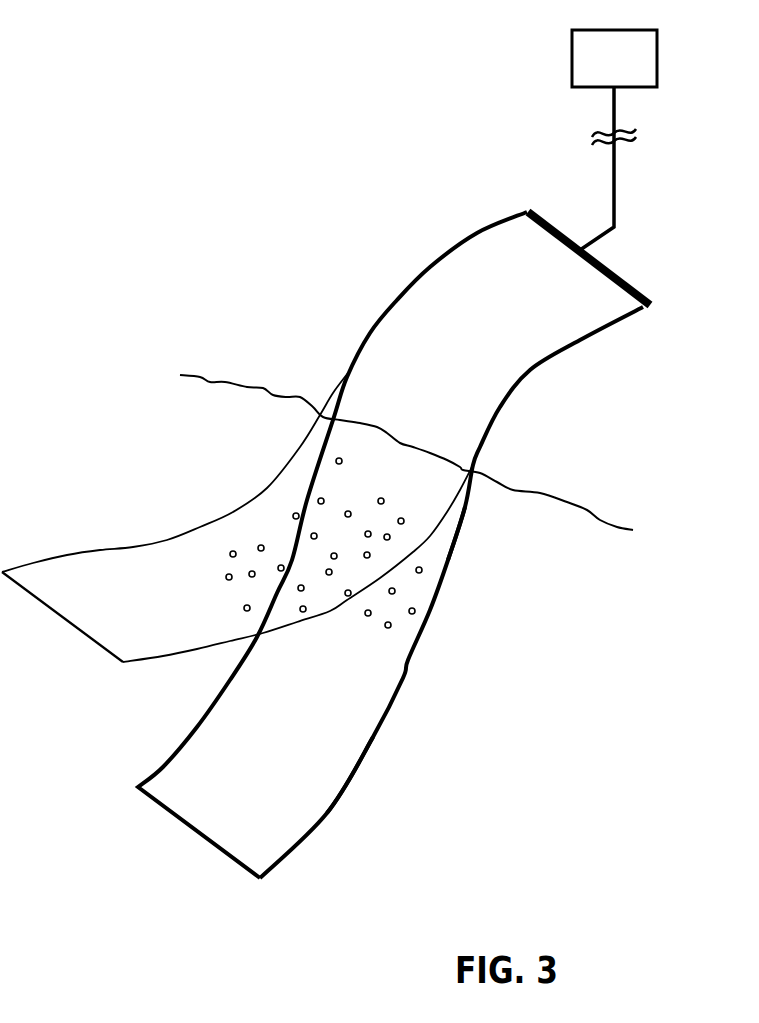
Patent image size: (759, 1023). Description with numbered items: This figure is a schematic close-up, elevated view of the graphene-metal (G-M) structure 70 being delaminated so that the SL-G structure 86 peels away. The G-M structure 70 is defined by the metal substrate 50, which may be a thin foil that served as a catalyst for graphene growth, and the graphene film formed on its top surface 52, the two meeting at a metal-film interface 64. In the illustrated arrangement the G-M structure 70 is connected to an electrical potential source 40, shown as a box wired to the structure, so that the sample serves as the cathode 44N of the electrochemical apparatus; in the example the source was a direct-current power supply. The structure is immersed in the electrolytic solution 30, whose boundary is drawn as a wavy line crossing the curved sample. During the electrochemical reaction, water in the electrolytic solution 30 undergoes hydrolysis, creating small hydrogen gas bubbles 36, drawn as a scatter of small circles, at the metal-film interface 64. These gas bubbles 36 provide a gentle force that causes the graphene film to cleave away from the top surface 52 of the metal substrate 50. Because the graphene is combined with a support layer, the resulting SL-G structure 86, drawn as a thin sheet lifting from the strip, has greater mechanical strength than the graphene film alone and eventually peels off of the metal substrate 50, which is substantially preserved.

The electrolytic solution 30 is at (225, 382).
The gas bubbles 36 is at (390, 539).
The electrical potential source 40 is at (628, 71).
The cathode 44N is at (426, 545).
The metal substrate 50 is at (403, 678).
The top surface 52 is at (370, 715).
The metal-film interface 64 is at (437, 530).
The graphene-metal (G-M) structure 70 is at (426, 545).
The SL-G structure 86 is at (130, 565).